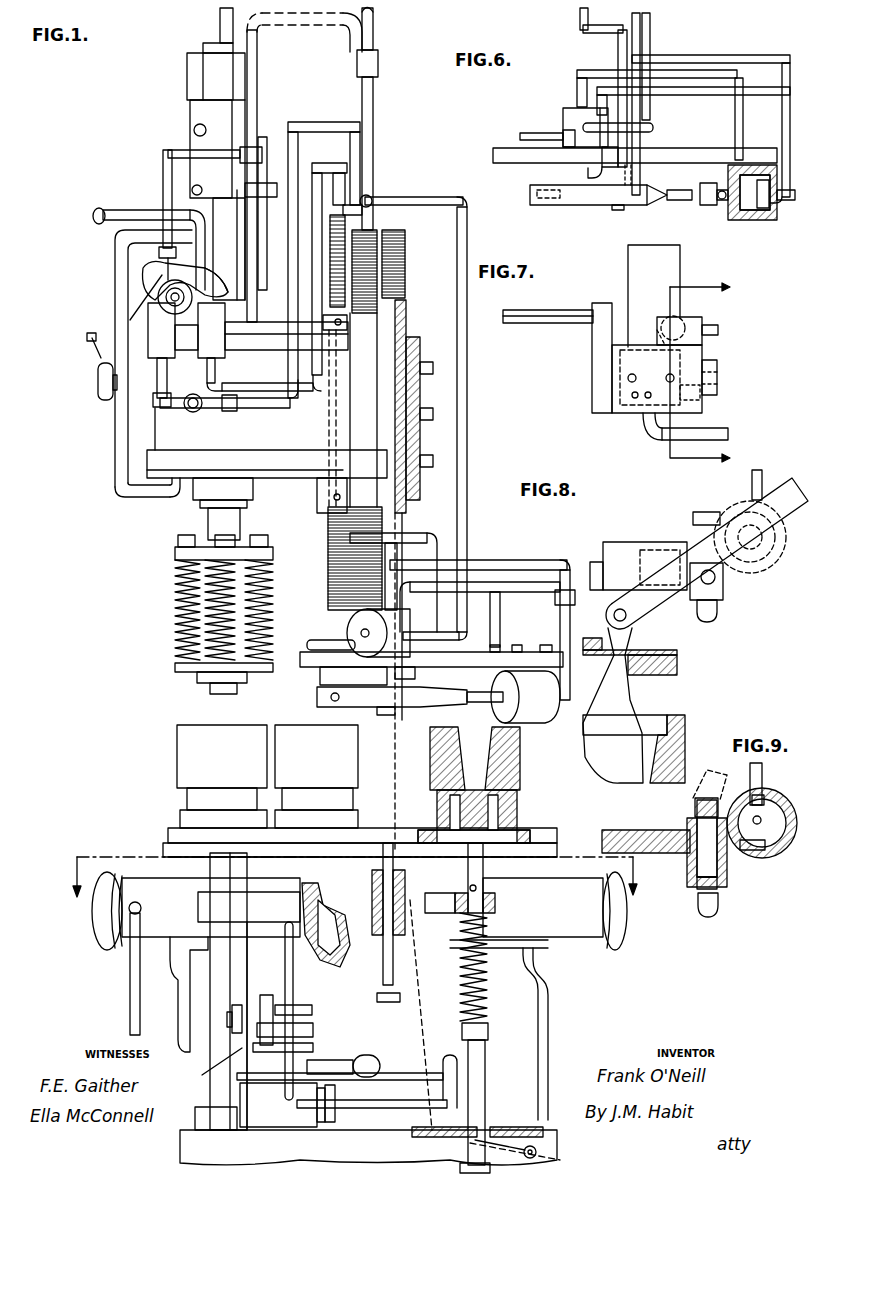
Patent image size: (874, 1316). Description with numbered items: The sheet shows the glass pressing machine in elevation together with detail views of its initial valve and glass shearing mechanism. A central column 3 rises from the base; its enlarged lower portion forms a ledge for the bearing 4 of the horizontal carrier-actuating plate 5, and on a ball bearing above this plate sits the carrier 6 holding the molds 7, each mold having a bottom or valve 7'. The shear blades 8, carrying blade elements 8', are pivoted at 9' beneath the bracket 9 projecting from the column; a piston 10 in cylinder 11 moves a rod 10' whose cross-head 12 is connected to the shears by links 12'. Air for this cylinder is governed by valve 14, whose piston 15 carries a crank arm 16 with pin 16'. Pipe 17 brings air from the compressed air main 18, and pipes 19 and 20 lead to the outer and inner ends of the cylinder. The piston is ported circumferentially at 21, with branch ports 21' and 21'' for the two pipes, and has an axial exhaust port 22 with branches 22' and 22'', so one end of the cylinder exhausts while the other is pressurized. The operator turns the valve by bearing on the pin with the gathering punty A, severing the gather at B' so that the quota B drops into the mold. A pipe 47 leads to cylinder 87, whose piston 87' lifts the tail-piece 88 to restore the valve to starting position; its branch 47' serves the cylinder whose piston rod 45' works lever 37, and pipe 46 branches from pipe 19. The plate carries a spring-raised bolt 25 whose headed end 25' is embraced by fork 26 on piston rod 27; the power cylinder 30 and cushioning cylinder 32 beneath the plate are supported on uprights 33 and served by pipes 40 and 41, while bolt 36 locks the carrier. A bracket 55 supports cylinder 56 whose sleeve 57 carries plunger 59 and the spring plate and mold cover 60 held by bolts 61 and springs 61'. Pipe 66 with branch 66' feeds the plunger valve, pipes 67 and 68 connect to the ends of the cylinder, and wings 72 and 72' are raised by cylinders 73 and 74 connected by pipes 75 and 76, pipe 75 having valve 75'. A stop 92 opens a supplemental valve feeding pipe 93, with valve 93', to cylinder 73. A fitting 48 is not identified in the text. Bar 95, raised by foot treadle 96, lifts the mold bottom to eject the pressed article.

In FIG. 1, the central column 3 is at (406, 268).
In FIG. 1, the bearing 4 is at (350, 912).
In FIG. 1, the carrier-actuating plate 5 is at (483, 865).
In FIG. 1, the carrier 6 is at (530, 857).
In FIG. 1, the molds 7 is at (343, 776).
In FIG. 8, the molds 7 is at (643, 741).
In FIG. 1, the mold bottom 7' is at (478, 816).
In FIG. 1, the shear blades 8 is at (410, 712).
In FIG. 6, the shear blades 8 is at (598, 206).
In FIG. 8, the shear blades 8 is at (664, 668).
In FIG. 6, the blade elements 8' is at (536, 208).
In FIG. 8, the blade elements 8' is at (640, 656).
In FIG. 1, the bracket 9 is at (431, 652).
In FIG. 6, the bracket 9 is at (635, 143).
In FIG. 7, the bracket 9 is at (700, 374).
In FIG. 8, the bracket 9 is at (587, 564).
In FIG. 1, the shear pivot 9' is at (384, 723).
In FIG. 6, the shear pivot 9' is at (614, 200).
In FIG. 6, the piston 10 is at (756, 203).
In FIG. 6, the piston rod 10' is at (711, 211).
In FIG. 1, the cylinder 11 is at (545, 720).
In FIG. 6, the cylinder 11 is at (740, 220).
In FIG. 6, the cross-head 12 is at (705, 184).
In FIG. 6, the links 12' is at (675, 211).
In FIG. 6, the valve 14 is at (575, 115).
In FIG. 7, the valve piston 15 is at (612, 380).
In FIG. 9, the valve piston 15 is at (775, 842).
In FIG. 1, the crank arm 16 is at (369, 633).
In FIG. 6, the crank arm 16 is at (551, 129).
In FIG. 7, the crank arm 16 is at (587, 358).
In FIG. 8, the crank arm 16 is at (727, 614).
In FIG. 1, the pin 16' is at (327, 635).
In FIG. 6, the pin 16' is at (526, 125).
In FIG. 7, the pin 16' is at (548, 329).
In FIG. 8, the pin 16' is at (707, 553).
In FIG. 1, the pipe 17 is at (467, 455).
In FIG. 6, the pipe 17 is at (647, 113).
In FIG. 7, the pipe 17 is at (730, 435).
In FIG. 1, the compressed air main 18 is at (374, 33).
In FIG. 1, the pipe 19 is at (560, 630).
In FIG. 6, the pipe 19 is at (698, 95).
In FIG. 7, the pipe 19 is at (674, 376).
In FIG. 9, the pipe 19 is at (750, 770).
In FIG. 1, the pipe 20 is at (383, 608).
In FIG. 6, the pipe 20 is at (582, 70).
In FIG. 7, the pipe 20 is at (628, 379).
In FIG. 8, the pipe 20 is at (762, 480).
In FIG. 7, the circumferential port 21 is at (650, 332).
In FIG. 7, the branch port 21' is at (710, 398).
In FIG. 9, the branch port 21' is at (775, 787).
In FIG. 7, the branch port 21'' is at (609, 417).
In FIG. 8, the branch port 21'' is at (707, 506).
In FIG. 7, the axial exhaust port 22 is at (734, 377).
In FIG. 8, the axial exhaust port 22 is at (724, 582).
In FIG. 9, the axial exhaust port 22 is at (755, 860).
In FIG. 9, the exhaust branch 22' is at (744, 859).
In FIG. 7, the exhaust branch 22'' is at (631, 426).
In FIG. 8, the exhaust branch 22'' is at (755, 546).
In FIG. 1, the spring-raised bolt 25 is at (378, 914).
In FIG. 1, the headed lower end 25' is at (375, 994).
In FIG. 1, the fork 26 is at (313, 1010).
In FIG. 1, the piston rod 27 is at (313, 1047).
In FIG. 1, the power cylinder 30 is at (155, 889).
In FIG. 1, the cushioning cylinder 32 is at (580, 885).
In FIG. 1, the uprights 33 is at (178, 1005).
In FIG. 1, the locking bolt 36 is at (248, 975).
In FIG. 1, the lever 37 is at (232, 1010).
In FIG. 1, the pipe 40 is at (130, 993).
In FIG. 1, the pipe 41 is at (294, 985).
In FIG. 1, the piston rod 45' is at (203, 1067).
In FIG. 1, the pipe 46 is at (394, 395).
In FIG. 1, the pipe 47 is at (409, 523).
In FIG. 9, the pipe 47 is at (701, 921).
In FIG. 1, the branch pipe 47' is at (340, 1085).
In FIG. 1, the pipe cap 48 is at (358, 1066).
In FIG. 1, the bracket 55 is at (330, 449).
In FIG. 1, the cylinder 56 is at (158, 428).
In FIG. 1, the sleeve 57 is at (230, 222).
In FIG. 1, the plunger 59 is at (237, 688).
In FIG. 1, the spring plate and mold cover 60 is at (176, 667).
In FIG. 1, the bolts 61 is at (204, 547).
In FIG. 1, the springs 61' is at (198, 610).
In FIG. 1, the pipe 66 is at (259, 176).
In FIG. 1, the branch pipe 66' is at (186, 215).
In FIG. 1, the pipe 67 is at (104, 208).
In FIG. 1, the pipe 68 is at (113, 470).
In FIG. 1, the wing 72 is at (178, 281).
In FIG. 1, the wing 72' is at (219, 270).
In FIG. 1, the cylinder 73 is at (161, 355).
In FIG. 1, the cylinder 74 is at (200, 343).
In FIG. 1, the pipe 75 is at (253, 286).
In FIG. 1, the valve 75' is at (210, 417).
In FIG. 1, the pipe 76 is at (321, 121).
In FIG. 7, the cylinder 87 is at (672, 316).
In FIG. 9, the cylinder 87 is at (685, 898).
In FIG. 9, the piston 87' is at (693, 843).
In FIG. 7, the tail-piece 88 is at (716, 328).
In FIG. 9, the tail-piece 88 is at (695, 805).
In FIG. 1, the stop 92 is at (205, 190).
In FIG. 1, the pipe 93 is at (89, 381).
In FIG. 1, the valve 93' is at (81, 338).
In FIG. 1, the spring-depressed bar 95 is at (485, 1068).
In FIG. 1, the foot treadle 96 is at (470, 1150).
In FIG. 8, the gathering punty A is at (645, 566).
In FIG. 8, the quota of molten glass B is at (622, 719).
In FIG. 8, the severing point B' is at (632, 641).